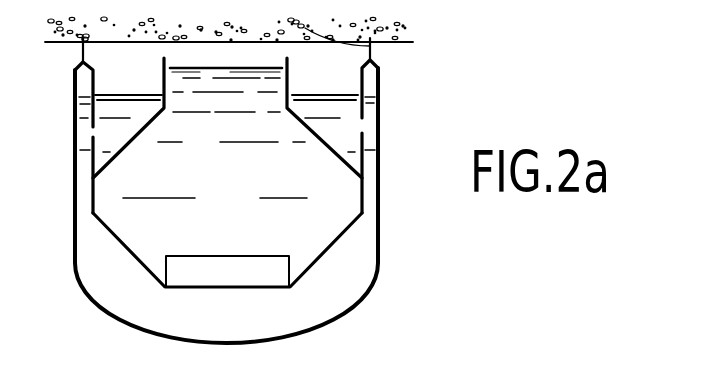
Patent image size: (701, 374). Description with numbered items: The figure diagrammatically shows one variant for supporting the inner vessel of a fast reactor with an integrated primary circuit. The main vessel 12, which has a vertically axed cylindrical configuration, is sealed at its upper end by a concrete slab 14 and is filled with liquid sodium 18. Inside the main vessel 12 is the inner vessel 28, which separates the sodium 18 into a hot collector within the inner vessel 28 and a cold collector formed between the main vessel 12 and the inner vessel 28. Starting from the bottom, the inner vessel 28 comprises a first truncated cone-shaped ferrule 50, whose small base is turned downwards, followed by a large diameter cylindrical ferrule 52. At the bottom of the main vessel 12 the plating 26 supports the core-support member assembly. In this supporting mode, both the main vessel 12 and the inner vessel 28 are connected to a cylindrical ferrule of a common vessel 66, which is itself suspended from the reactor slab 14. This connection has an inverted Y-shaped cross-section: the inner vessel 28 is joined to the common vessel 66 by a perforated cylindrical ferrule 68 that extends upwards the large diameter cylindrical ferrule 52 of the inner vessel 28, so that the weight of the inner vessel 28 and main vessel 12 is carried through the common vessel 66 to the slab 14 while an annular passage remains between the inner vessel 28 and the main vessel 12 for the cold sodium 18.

The main vessel 12 is at (72, 207).
The concrete slab 14 is at (370, 46).
The liquid sodium 18 is at (337, 278).
The plating 26 is at (198, 268).
The inner vessel 28 is at (130, 259).
The first truncated cone-shaped ferrule 50 is at (345, 233).
The large diameter cylindrical ferrule 52 is at (362, 195).
The common vessel 66 is at (82, 50).
The perforated cylindrical ferrule 68 is at (77, 145).